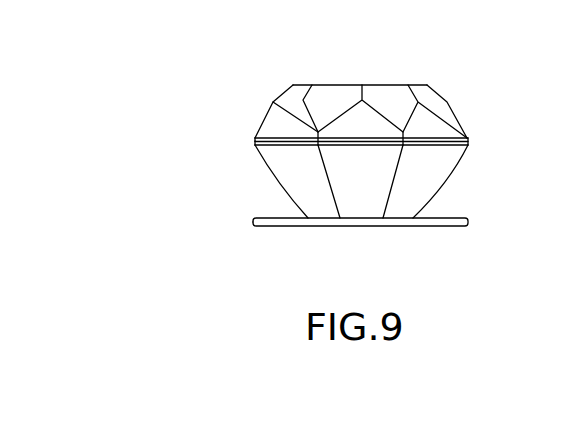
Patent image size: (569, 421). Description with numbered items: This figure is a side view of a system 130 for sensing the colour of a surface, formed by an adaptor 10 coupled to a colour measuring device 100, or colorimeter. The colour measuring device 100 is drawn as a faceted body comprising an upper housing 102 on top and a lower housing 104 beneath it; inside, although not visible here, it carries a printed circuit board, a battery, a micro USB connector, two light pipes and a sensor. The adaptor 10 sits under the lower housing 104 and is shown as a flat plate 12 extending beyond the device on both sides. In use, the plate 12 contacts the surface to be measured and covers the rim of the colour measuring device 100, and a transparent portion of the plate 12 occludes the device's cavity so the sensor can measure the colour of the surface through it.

The colour measuring device 100 is at (319, 120).
The upper housing 102 is at (380, 95).
The lower housing 104 is at (433, 175).
The adaptor 10 is at (280, 233).
The plate 12 is at (432, 230).
The system 130 is at (128, 155).